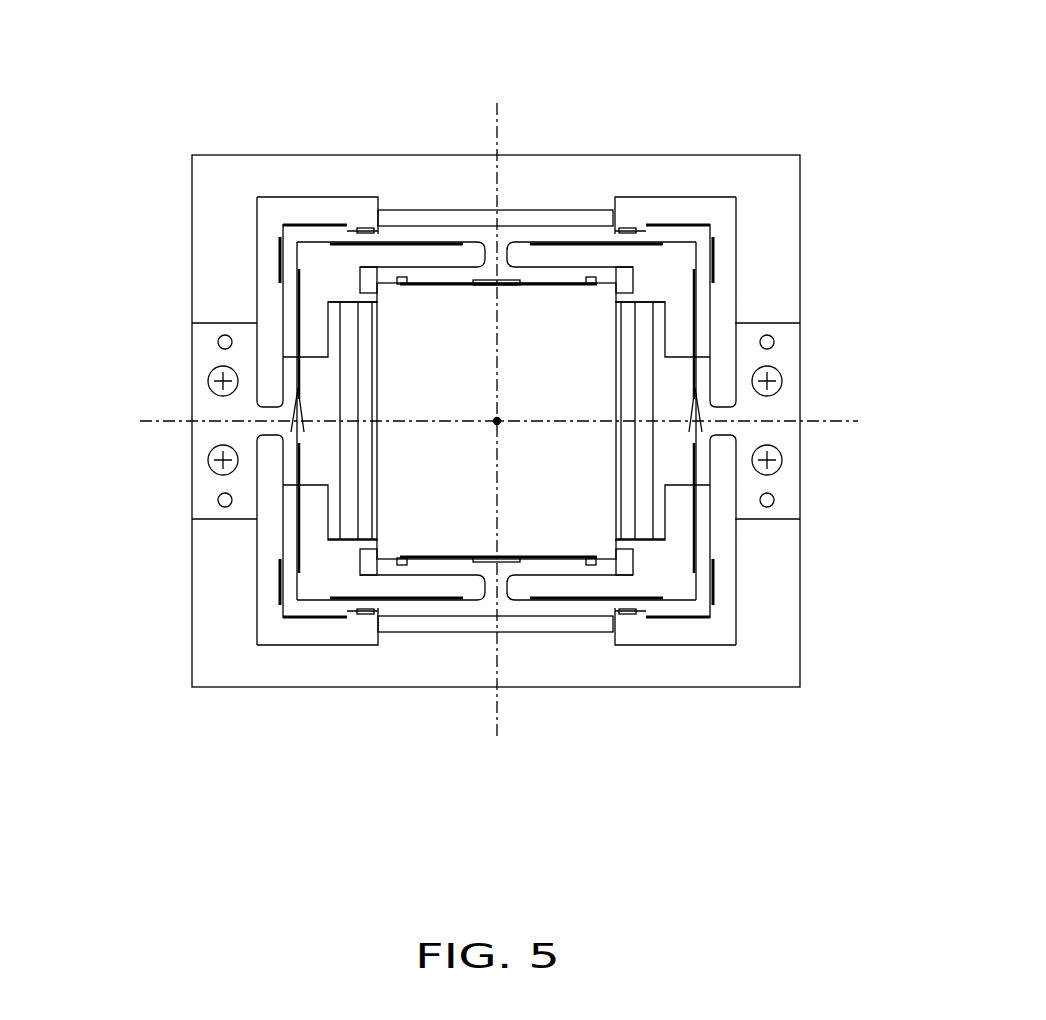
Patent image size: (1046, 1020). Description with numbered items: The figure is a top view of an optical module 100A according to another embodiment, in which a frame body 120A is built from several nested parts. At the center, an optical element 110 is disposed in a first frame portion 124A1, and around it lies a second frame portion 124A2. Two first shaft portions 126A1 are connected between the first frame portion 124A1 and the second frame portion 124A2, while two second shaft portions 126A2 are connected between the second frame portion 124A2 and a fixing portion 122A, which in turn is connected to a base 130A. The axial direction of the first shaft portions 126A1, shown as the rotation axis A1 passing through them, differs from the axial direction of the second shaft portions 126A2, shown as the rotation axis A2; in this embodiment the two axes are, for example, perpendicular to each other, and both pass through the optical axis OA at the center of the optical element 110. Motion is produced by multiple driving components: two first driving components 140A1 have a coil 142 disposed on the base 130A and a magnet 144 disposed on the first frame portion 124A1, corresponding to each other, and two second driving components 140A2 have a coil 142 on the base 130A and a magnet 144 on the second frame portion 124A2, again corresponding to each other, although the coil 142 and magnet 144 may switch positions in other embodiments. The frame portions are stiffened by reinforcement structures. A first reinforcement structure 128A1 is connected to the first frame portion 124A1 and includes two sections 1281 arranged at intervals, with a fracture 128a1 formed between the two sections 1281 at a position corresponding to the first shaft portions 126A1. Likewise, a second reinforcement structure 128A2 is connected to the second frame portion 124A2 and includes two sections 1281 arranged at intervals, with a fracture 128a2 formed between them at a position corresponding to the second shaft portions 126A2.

The optical module 100A is at (905, 878).
The optical element 110 is at (597, 298).
The frame body 120A is at (497, 407).
The fixing portion 122A is at (198, 340).
The first frame portion 124A1 is at (375, 265).
The second frame portion 124A2 is at (337, 230).
The first shaft portion 126A1 is at (417, 268).
The second shaft portion 126A2 is at (291, 432).
The first reinforcement structure 128A1 is at (127, 128).
The second reinforcement structure 128A2 is at (876, 523).
The section 1281 is at (502, 407).
The fracture 128a1 is at (505, 262).
The fracture 128a2 is at (300, 440).
The base 130A is at (577, 167).
The first driving component 140A1 is at (124, 208).
The second driving component 140A2 is at (503, 426).
The coil 142 is at (573, 215).
The magnet 144 is at (600, 233).
The rotation axis A1 is at (497, 124).
The rotation axis A2 is at (165, 421).
The optical axis OA is at (497, 421).